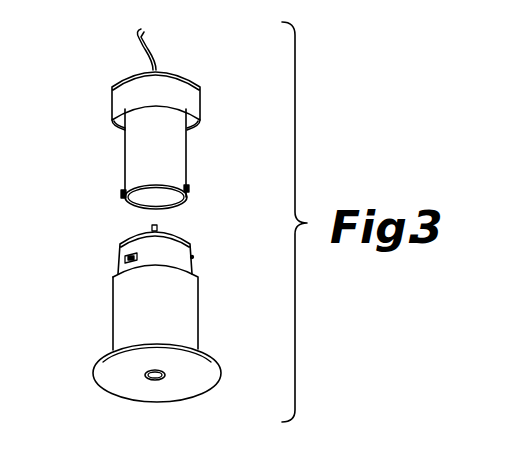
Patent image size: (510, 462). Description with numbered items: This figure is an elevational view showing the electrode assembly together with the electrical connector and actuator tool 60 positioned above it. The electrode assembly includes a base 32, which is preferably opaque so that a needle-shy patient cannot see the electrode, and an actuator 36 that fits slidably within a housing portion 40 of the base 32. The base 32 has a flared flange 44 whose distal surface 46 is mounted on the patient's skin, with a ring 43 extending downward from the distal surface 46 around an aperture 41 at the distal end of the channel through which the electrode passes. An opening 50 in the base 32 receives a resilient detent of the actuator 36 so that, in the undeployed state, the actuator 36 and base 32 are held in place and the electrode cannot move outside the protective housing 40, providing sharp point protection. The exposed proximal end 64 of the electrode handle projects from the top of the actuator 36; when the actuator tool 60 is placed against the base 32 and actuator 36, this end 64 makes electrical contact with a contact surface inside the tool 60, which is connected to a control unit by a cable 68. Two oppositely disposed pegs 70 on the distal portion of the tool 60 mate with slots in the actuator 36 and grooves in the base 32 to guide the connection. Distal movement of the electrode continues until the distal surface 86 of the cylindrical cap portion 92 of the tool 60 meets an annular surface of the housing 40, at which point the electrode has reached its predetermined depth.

The base 32 is at (185, 308).
The actuator 36 is at (122, 241).
The housing portion 40 is at (123, 308).
The aperture 41 is at (153, 383).
The ring 43 is at (165, 378).
The flange 44 is at (103, 362).
The distal surface 46 is at (112, 380).
The opening 50 is at (125, 259).
The electrical connector and actuator tool 60 is at (132, 153).
The exposed proximal end of electrode handle 64 is at (160, 228).
The cable 68 is at (147, 50).
The pegs 70 is at (122, 193).
The distal surface of cap portion 86 is at (191, 131).
The cylindrical cap portion 92 is at (117, 101).